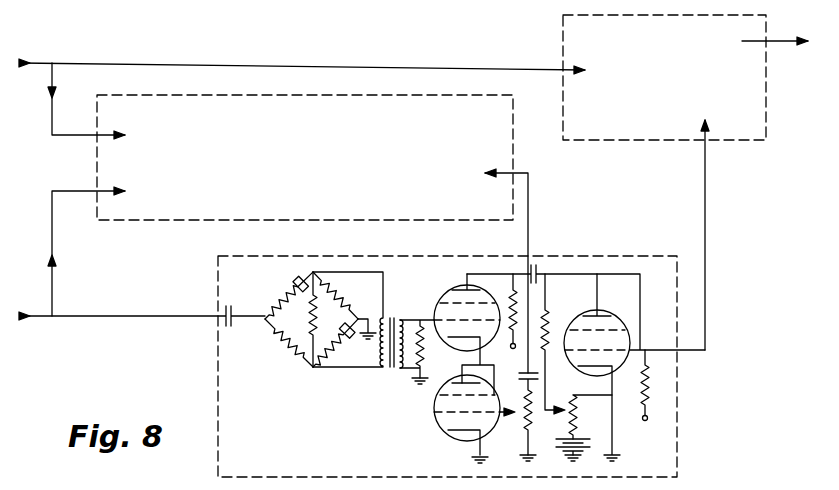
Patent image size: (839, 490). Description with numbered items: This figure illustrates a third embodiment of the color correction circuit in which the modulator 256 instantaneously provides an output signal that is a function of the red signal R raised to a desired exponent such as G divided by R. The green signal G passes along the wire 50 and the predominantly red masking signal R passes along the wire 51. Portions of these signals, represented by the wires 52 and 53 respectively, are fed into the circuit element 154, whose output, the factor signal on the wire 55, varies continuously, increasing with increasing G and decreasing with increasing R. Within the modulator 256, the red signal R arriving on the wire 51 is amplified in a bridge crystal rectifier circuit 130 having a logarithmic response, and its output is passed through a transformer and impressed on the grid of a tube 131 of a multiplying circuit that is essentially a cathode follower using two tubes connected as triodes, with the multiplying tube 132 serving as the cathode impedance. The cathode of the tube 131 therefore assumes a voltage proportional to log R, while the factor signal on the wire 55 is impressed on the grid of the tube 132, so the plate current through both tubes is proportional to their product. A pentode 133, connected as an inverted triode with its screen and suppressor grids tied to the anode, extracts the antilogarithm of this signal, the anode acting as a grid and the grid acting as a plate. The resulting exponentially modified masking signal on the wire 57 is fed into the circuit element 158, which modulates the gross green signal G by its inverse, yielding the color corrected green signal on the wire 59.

The wire 50 is at (126, 63).
The wire 52 is at (52, 88).
The wire 53 is at (53, 278).
The wire 51 is at (112, 316).
The circuit element 154 is at (305, 157).
The circuit element 158 is at (664, 77).
The wire 55 is at (530, 212).
The wire 57 is at (706, 226).
The wire 59 is at (778, 42).
The bridge crystal rectifier circuit 130 is at (284, 337).
The tube 131 is at (450, 290).
The multiplying tube 132 is at (437, 415).
The pentode 133 is at (592, 310).
The modulator 256 is at (680, 418).